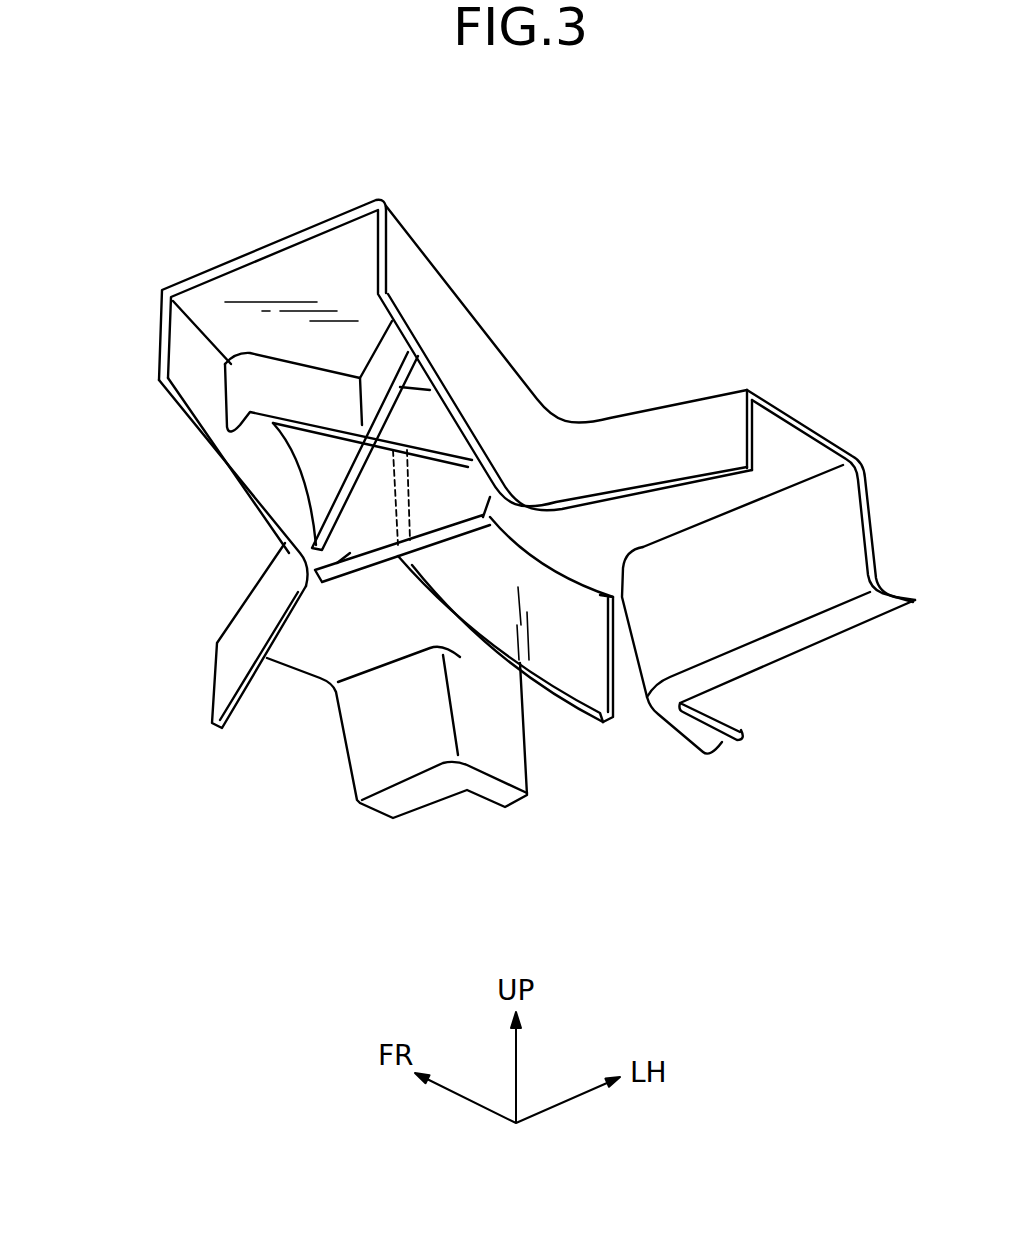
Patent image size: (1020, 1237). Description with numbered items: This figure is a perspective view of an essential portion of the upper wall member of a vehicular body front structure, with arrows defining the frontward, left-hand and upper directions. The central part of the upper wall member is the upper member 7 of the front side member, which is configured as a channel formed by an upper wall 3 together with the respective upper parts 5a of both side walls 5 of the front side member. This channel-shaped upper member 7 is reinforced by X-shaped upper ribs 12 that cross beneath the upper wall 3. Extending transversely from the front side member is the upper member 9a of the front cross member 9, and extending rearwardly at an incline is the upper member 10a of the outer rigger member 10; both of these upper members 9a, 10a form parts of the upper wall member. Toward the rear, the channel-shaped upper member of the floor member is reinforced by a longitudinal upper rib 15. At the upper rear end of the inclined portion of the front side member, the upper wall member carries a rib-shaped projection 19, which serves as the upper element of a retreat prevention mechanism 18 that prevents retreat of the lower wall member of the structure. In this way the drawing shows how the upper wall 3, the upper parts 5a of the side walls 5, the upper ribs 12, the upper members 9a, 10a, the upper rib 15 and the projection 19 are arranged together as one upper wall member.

The upper wall 3 is at (292, 258).
The upper parts of side walls 5a is at (466, 340).
The side walls 5 is at (565, 358).
The upper member 7 is at (470, 272).
The upper member of front cross member 9a is at (237, 615).
The front cross member 9 is at (188, 635).
The upper member of outer rigger member 10a is at (798, 418).
The outer rigger member 10 is at (768, 539).
The X-shaped upper ribs 12 is at (247, 388).
The longitudinal upper rib 15 is at (588, 714).
The retreat prevention mechanism 18 is at (378, 585).
The rib-shaped projection 19 is at (318, 590).